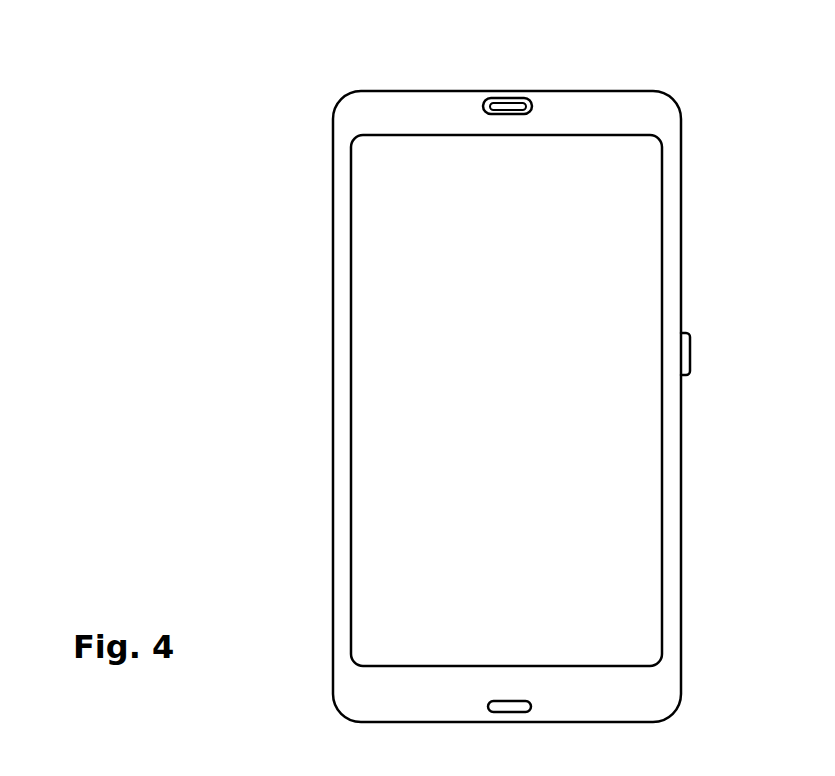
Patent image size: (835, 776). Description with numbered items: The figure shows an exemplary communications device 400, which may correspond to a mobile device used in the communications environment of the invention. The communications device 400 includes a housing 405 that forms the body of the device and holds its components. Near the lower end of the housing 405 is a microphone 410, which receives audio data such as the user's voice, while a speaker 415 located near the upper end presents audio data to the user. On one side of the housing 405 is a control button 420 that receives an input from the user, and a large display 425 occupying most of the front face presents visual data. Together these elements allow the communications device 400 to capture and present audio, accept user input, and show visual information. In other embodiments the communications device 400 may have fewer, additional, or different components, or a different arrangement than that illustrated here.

The communications device 400 is at (131, 72).
The housing 405 is at (333, 356).
The microphone 410 is at (512, 713).
The speaker 415 is at (517, 97).
The control button 420 is at (690, 352).
The display 425 is at (650, 228).